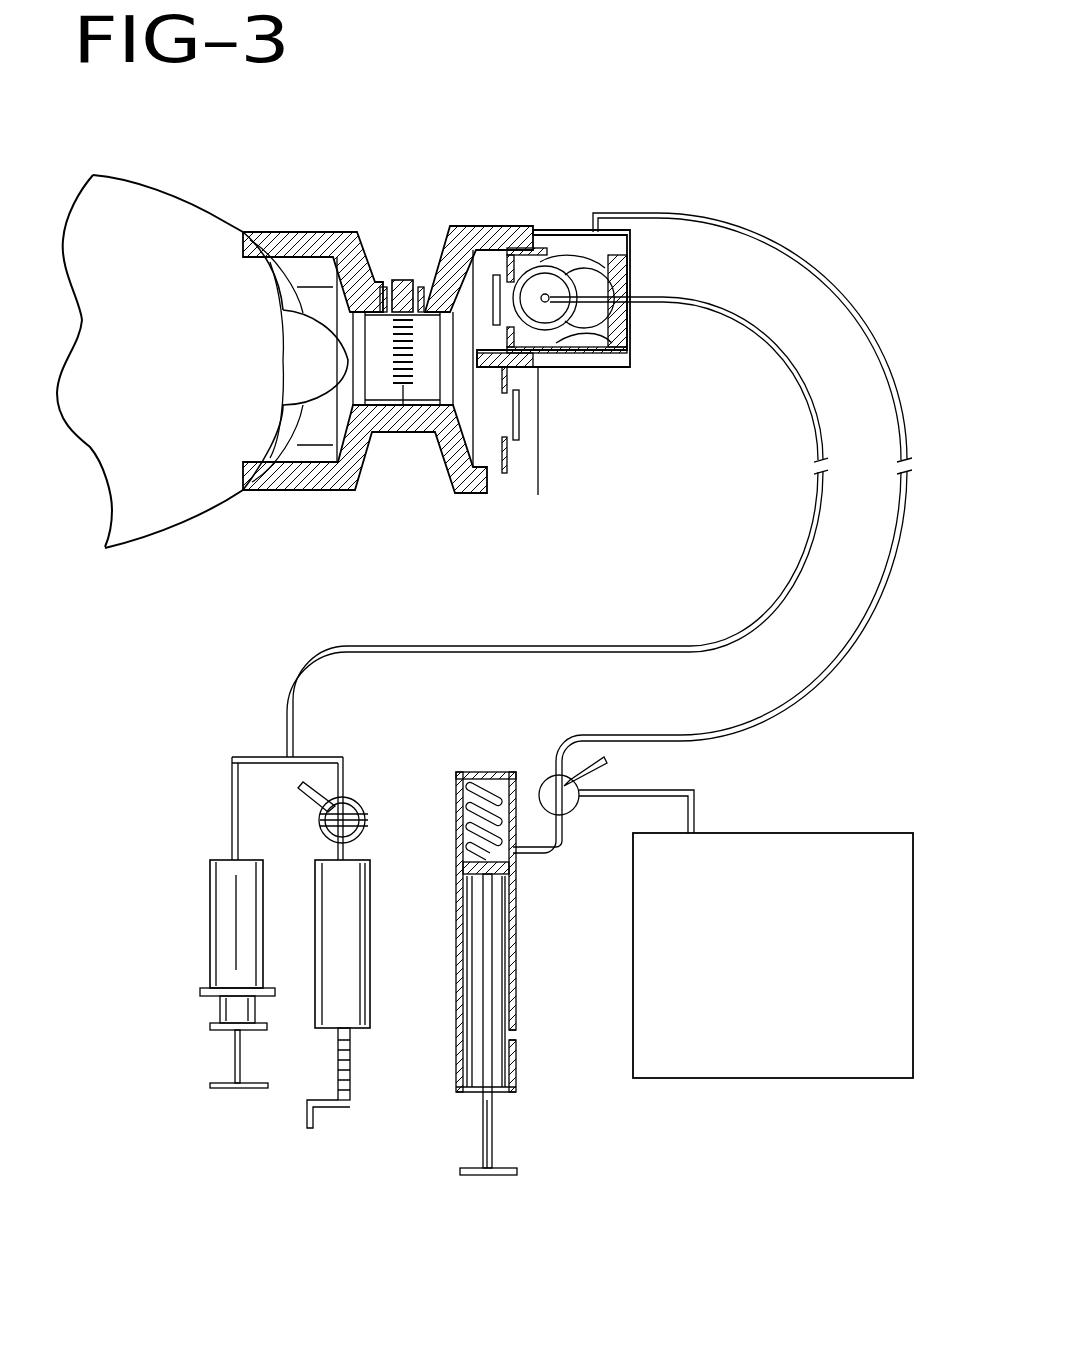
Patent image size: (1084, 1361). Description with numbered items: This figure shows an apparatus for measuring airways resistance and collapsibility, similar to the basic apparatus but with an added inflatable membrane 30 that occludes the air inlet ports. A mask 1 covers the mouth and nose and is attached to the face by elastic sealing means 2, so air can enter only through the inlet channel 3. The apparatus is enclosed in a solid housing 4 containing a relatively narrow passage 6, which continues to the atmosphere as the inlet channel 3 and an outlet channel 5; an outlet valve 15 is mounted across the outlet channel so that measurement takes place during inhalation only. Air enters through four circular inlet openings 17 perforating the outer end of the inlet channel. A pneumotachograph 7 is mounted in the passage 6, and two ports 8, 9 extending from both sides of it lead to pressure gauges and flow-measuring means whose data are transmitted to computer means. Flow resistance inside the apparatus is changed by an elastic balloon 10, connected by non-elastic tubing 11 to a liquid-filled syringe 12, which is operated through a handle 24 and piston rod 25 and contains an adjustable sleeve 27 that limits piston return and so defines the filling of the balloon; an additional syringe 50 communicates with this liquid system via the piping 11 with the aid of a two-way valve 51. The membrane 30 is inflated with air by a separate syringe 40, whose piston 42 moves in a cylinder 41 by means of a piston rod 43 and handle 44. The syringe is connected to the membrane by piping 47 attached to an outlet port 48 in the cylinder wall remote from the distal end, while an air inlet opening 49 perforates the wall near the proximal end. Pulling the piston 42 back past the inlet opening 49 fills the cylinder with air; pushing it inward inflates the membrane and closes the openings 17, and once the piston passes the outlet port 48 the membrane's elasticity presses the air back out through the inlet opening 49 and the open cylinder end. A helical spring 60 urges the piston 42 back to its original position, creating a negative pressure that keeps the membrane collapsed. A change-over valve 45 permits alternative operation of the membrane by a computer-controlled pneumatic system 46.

The mask 1 is at (308, 230).
The elastic sealing means 2 is at (288, 462).
The inlet channel 3 is at (465, 226).
The solid housing 4 is at (352, 482).
The outlet channel 5 is at (483, 455).
The passage 6 is at (425, 385).
The pneumotachograph 7 is at (403, 392).
The port 8 is at (385, 285).
The port 9 is at (420, 282).
The elastic balloon 10 is at (558, 268).
The non-elastic tubing 11 is at (705, 308).
The syringe 12 is at (210, 888).
The outlet valve 15 is at (519, 415).
The inlet openings 17 is at (572, 262).
The handle 24 is at (212, 1085).
The piston rod 25 is at (235, 1060).
The sleeve 27 is at (212, 1026).
The membrane 30 is at (566, 228).
The syringe 40 is at (457, 772).
The cylinder 41 is at (485, 985).
The piston 42 is at (464, 866).
The piston rod 43 is at (493, 1148).
The handle 44 is at (462, 1172).
The change-over valve 45 is at (549, 776).
The computer-controlled pneumatic system 46 is at (792, 1080).
The piping 47 is at (826, 680).
The outlet port 48 is at (571, 856).
The air inlet opening 49 is at (516, 1036).
The additional syringe 50 is at (370, 1030).
The two-way valve 51 is at (365, 793).
The helical spring 60 is at (494, 780).